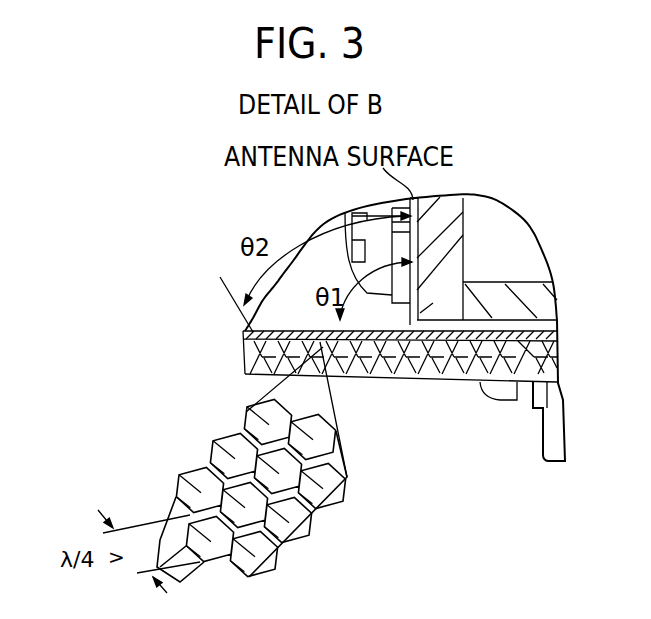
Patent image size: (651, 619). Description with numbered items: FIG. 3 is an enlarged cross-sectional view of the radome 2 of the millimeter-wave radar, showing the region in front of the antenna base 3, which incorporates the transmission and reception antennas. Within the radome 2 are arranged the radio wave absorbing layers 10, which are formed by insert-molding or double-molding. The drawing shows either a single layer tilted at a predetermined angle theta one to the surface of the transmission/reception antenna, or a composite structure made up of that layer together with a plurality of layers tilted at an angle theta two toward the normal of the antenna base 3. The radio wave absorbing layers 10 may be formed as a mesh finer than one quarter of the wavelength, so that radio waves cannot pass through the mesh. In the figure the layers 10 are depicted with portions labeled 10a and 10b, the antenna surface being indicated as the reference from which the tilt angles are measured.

The radome 2 is at (251, 409).
The antenna base 3 is at (453, 232).
The radio wave absorbing layers 10 is at (198, 453).
The first skin layer 10a is at (250, 333).
The second skin layer 10b is at (441, 357).